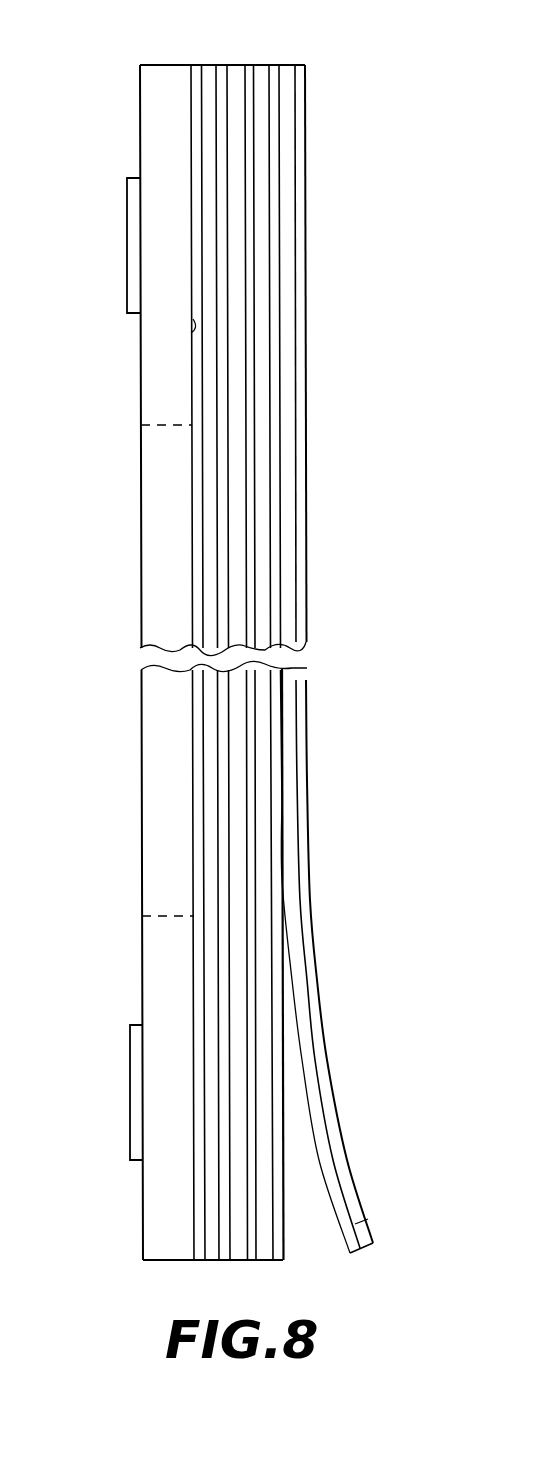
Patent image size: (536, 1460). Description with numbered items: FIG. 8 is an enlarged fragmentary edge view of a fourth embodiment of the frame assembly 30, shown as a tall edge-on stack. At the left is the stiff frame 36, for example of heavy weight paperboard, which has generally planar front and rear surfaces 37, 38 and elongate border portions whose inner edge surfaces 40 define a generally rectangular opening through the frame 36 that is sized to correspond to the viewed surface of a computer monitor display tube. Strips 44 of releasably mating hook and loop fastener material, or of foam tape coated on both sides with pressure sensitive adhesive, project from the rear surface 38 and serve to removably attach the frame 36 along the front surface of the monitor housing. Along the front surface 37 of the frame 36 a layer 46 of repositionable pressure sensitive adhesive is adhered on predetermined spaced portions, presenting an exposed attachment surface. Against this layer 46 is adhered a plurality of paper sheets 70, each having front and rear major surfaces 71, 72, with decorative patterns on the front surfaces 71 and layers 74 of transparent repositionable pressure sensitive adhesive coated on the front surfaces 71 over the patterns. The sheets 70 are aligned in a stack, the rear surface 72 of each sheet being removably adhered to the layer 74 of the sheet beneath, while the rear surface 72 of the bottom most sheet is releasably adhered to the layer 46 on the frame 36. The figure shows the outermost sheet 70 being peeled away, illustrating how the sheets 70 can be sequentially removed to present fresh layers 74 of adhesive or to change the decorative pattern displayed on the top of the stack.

The frame assembly 30 is at (134, 56).
The frame 36 is at (172, 76).
The front surface 37 is at (190, 331).
The rear surface 38 is at (140, 128).
The inner edge surfaces 40 is at (166, 427).
The strips 44 is at (131, 219).
The layer of repositionable pressure sensitive adhesive 46 is at (190, 582).
The paper sheets 70 is at (205, 74).
The front major surface 71 is at (362, 1222).
The rear major surface 72 is at (345, 1245).
The layers of transparent repositionable pressure sensitive adhesive 74 is at (250, 72).